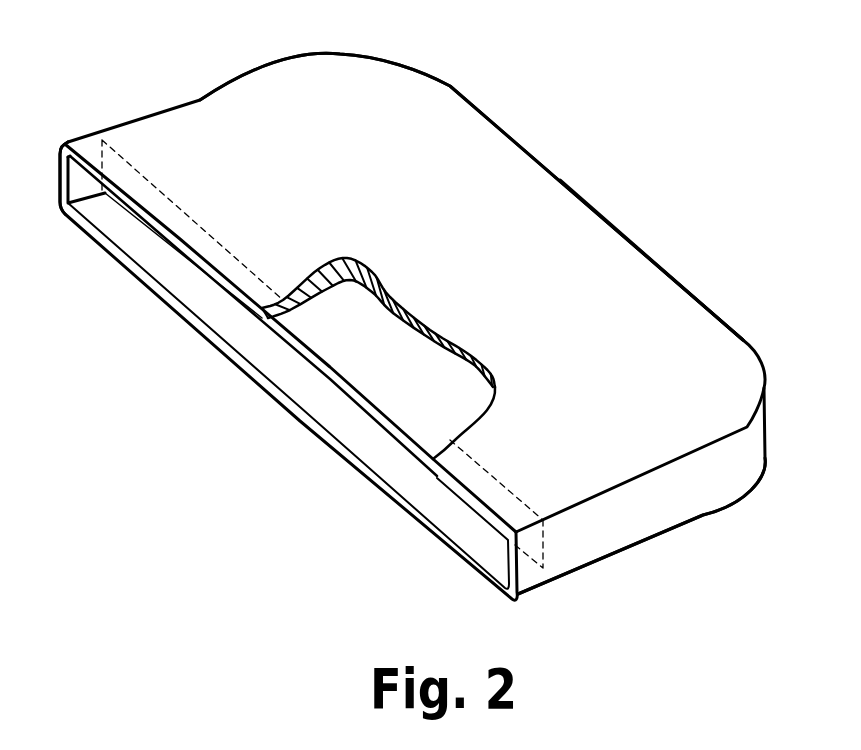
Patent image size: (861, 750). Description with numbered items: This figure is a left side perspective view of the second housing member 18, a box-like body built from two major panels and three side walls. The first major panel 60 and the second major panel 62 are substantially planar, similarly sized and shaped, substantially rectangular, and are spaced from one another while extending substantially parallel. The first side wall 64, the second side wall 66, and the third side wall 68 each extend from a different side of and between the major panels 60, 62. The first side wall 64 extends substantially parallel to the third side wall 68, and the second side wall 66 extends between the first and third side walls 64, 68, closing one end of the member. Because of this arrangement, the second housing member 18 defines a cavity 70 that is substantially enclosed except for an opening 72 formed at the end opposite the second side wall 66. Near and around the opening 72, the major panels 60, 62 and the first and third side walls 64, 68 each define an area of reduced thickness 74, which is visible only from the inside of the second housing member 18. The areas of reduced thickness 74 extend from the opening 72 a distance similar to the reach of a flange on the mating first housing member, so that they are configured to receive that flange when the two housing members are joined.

The second housing member 18 is at (627, 158).
The first major panel 60 is at (348, 360).
The second major panel 62 is at (353, 113).
The first side wall 64 is at (633, 515).
The second side wall 66 is at (700, 300).
The third side wall 68 is at (158, 110).
The cavity 70 is at (444, 411).
The opening 72 is at (239, 329).
The area of reduced thickness 74 is at (348, 424).